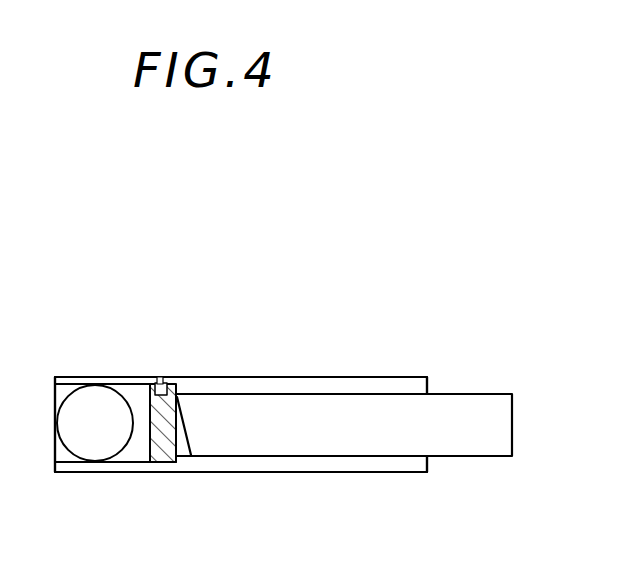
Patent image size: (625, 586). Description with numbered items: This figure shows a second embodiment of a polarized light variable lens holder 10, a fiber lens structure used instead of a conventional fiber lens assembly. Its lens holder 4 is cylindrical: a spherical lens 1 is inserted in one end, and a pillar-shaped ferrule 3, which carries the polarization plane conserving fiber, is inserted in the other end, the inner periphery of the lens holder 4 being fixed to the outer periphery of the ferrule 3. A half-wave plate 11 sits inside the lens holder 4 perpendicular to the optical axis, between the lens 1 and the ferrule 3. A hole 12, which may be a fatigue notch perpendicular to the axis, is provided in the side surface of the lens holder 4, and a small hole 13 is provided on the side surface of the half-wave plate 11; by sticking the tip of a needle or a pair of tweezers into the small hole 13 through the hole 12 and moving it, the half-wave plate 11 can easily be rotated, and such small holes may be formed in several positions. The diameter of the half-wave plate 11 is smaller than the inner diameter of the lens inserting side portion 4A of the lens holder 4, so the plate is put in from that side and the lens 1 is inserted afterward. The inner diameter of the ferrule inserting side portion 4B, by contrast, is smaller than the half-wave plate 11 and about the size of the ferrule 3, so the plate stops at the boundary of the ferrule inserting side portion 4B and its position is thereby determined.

The polarized light variable lens holder 10 is at (247, 298).
The lens holder 4 is at (265, 373).
The lens inserting side portion 4A is at (72, 377).
The ferrule inserting side portion 4B is at (417, 378).
The spherical lens 1 is at (90, 450).
The hole 12 is at (153, 377).
The small hole 13 is at (165, 378).
The λ/2 plate 11 is at (158, 452).
The ferrule 3 is at (353, 448).